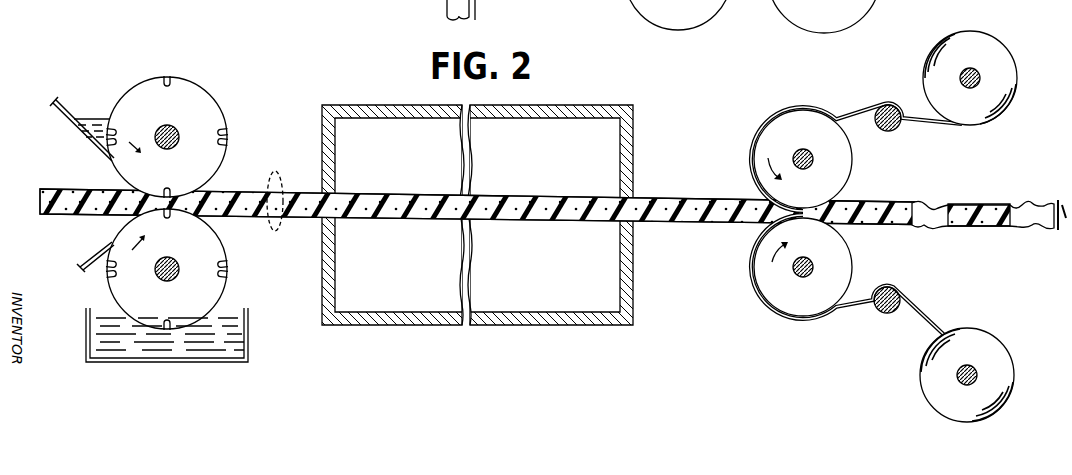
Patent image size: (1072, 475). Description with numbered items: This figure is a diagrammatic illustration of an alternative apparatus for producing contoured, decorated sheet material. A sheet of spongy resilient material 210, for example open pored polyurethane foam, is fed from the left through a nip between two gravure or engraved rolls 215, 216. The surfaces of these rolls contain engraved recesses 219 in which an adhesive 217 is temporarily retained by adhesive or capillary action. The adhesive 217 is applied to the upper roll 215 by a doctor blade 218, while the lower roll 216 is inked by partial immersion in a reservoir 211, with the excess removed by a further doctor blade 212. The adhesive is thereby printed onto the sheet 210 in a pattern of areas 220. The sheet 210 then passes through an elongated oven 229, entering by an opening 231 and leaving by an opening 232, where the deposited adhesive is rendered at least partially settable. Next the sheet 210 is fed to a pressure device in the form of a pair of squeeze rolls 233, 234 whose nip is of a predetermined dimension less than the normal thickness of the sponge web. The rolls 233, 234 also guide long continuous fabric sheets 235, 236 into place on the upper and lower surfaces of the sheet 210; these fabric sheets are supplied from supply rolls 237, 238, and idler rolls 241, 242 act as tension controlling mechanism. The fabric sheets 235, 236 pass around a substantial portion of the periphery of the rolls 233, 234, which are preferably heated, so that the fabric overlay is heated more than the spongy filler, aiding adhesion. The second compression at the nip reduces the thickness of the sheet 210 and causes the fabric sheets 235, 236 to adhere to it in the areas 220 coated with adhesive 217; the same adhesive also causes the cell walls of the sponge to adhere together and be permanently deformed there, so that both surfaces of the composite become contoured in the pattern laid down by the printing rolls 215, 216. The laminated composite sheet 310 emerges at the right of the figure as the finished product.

The sheet of spongy resilient material 210 is at (97, 204).
The reservoir 211 is at (88, 333).
The doctor blade 212 is at (88, 252).
The roll 215 is at (195, 110).
The roll 216 is at (205, 293).
The adhesive 217 is at (97, 122).
The doctor blade 218 is at (75, 123).
The recesses 219 is at (228, 143).
The areas 220 is at (292, 205).
The elongated oven 229 is at (502, 320).
The opening 231 is at (336, 192).
The opening 232 is at (626, 196).
The squeeze roll 233 is at (832, 177).
The squeeze roll 234 is at (837, 268).
The fabric sheet 235 is at (918, 130).
The fabric sheet 236 is at (938, 314).
The supply roll 237 is at (978, 37).
The supply roll 238 is at (938, 378).
The idler roll 241 is at (881, 108).
The idler roll 242 is at (895, 312).
The laminated product 310 is at (978, 232).